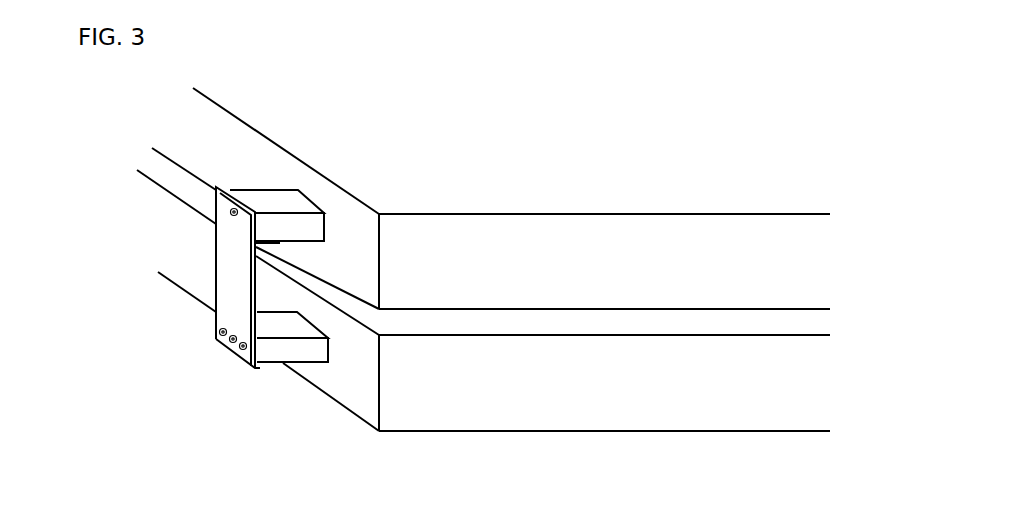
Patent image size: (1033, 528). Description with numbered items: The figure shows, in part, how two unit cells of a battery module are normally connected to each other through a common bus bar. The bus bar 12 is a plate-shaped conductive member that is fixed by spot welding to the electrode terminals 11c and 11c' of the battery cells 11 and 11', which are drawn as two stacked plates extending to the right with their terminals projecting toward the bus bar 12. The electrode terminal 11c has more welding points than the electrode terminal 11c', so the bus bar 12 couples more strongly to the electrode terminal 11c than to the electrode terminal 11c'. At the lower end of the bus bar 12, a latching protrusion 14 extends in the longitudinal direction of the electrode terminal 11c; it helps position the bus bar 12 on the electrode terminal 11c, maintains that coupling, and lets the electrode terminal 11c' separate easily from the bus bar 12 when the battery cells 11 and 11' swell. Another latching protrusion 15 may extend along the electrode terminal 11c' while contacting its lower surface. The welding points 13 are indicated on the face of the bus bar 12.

The battery cell 11 is at (483, 300).
The battery cell 11' is at (491, 198).
The electrode terminal 11c is at (364, 356).
The electrode terminal 11c' is at (303, 167).
The bus bar 12 is at (225, 273).
The screws 13 is at (218, 343).
The latching protrusion 14 is at (264, 366).
The latching protrusion 15 is at (280, 243).